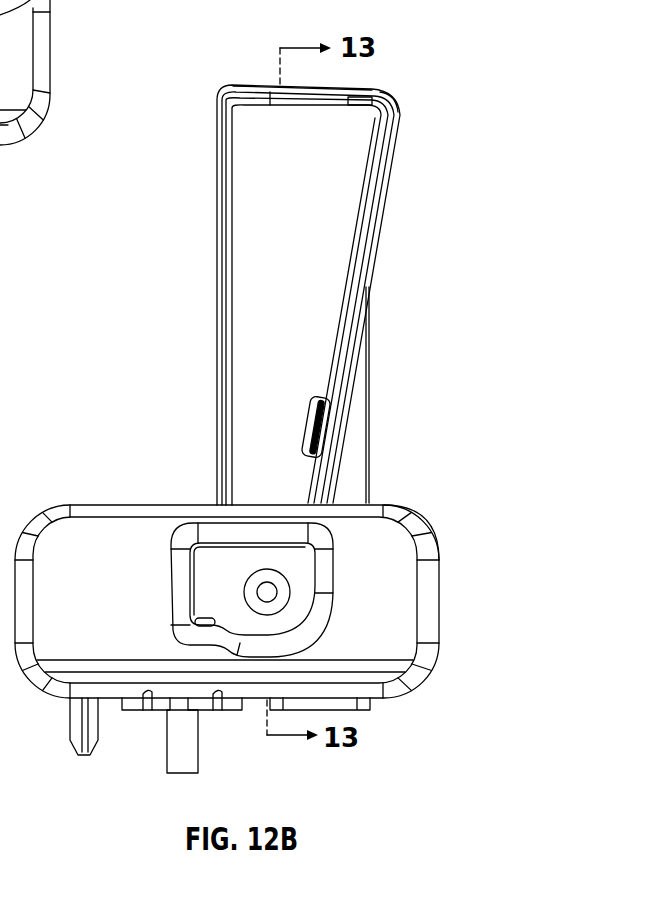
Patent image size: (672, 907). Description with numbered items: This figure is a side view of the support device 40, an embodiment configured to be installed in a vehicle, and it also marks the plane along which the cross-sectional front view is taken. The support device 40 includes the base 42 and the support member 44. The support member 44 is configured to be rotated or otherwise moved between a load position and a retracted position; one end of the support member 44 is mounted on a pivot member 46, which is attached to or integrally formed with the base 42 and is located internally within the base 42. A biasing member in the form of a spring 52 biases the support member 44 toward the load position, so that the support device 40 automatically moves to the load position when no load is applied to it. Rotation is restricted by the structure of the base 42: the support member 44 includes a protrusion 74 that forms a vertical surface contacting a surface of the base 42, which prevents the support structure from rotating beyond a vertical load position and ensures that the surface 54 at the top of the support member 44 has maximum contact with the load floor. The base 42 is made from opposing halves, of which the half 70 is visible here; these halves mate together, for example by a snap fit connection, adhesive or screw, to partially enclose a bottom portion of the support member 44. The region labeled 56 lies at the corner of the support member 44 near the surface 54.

The support device 40 is at (428, 48).
The base 42 is at (95, 547).
The support member 44 is at (247, 248).
The pivot member 46 is at (270, 590).
The spring 52 is at (327, 418).
The surface 54 is at (270, 85).
The corner 56 is at (402, 107).
The half 70 is at (400, 553).
The protrusion 74 is at (350, 467).